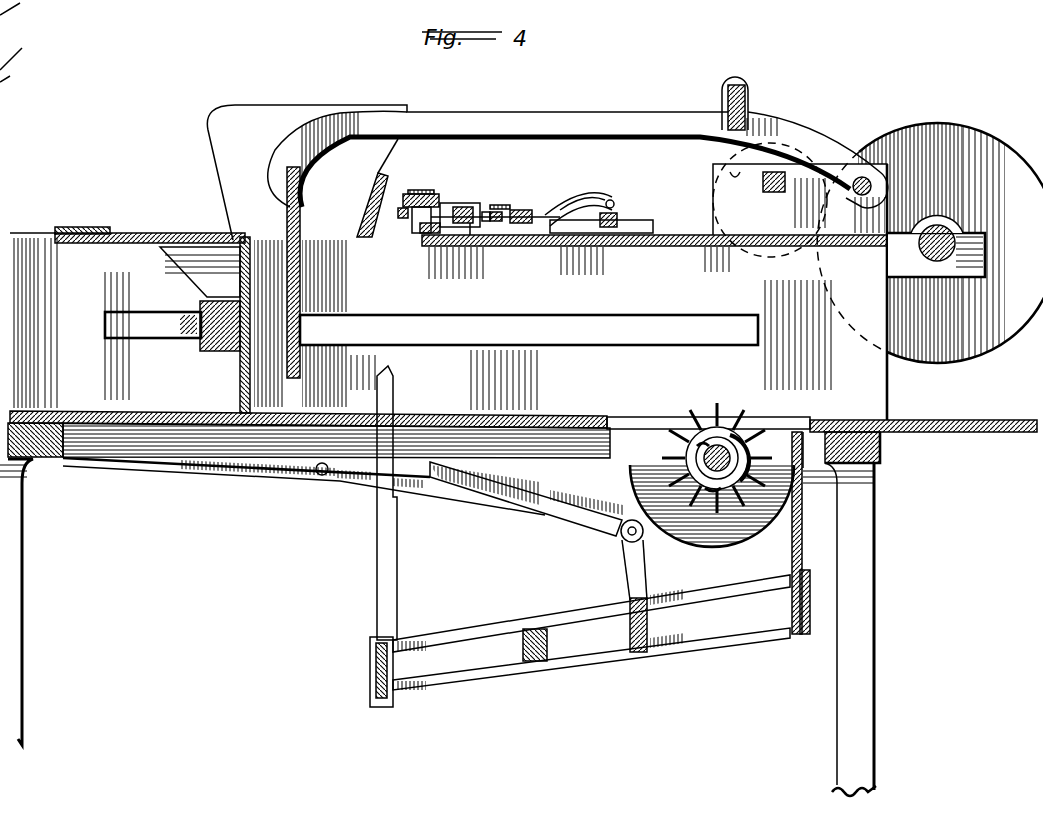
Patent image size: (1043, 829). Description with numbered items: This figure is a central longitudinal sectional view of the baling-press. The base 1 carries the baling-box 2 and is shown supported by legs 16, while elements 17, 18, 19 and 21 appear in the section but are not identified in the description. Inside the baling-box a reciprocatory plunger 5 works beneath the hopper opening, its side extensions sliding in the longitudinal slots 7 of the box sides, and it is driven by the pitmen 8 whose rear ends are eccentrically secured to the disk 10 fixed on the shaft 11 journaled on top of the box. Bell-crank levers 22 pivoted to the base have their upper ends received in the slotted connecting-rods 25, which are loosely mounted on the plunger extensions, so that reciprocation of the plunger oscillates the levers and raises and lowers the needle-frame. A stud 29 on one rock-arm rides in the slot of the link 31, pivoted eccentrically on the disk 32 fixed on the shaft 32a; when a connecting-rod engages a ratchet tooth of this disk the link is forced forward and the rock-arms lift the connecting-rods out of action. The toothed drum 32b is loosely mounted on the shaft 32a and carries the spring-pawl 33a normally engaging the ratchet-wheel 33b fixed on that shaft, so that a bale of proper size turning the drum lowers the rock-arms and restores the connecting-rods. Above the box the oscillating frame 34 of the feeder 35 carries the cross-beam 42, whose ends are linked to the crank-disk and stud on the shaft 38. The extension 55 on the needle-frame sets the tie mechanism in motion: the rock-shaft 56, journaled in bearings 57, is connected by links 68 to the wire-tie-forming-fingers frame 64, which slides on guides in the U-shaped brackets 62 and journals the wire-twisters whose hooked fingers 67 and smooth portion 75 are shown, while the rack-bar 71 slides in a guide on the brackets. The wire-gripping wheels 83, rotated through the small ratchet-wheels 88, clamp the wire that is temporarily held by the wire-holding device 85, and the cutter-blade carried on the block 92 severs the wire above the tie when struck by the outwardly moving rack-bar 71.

The base 1 is at (282, 96).
The baling-box 2 is at (422, 323).
The reciprocatory plunger 5 is at (192, 233).
The longitudinal slots 7 is at (431, 329).
The pitmen 8 is at (182, 330).
The disk 10 is at (930, 245).
The shaft 11 is at (927, 247).
The legs 16 is at (25, 547).
The bracket 17 is at (802, 527).
The lower rail 18 is at (720, 610).
The upper rail 19 is at (455, 628).
The vertical bar 21 is at (392, 539).
The bell-crank levers 22 is at (565, 502).
The connecting-rods 25 is at (628, 552).
The stud 29 is at (325, 483).
The link 31 is at (298, 466).
The disk 32 is at (715, 533).
The shaft 32a is at (713, 452).
The toothed drum 32b is at (705, 512).
The spring-pawl 33a is at (755, 436).
The ratchet-wheel 33b is at (696, 446).
The oscillating frame 34 is at (457, 123).
The feeder 35 is at (302, 271).
The shaft 38 is at (782, 172).
The cross-beam 42 is at (748, 96).
The extension 55 is at (528, 662).
The rock-shaft 56 is at (618, 220).
The bearings 57 is at (610, 262).
The U-shaped brackets 62 is at (551, 213).
The wire-tie-forming-fingers frame 64 is at (534, 175).
The hooked fingers 67 is at (444, 250).
The links 68 is at (581, 197).
The rack-bar 71 is at (495, 222).
The smooth portion 75 is at (472, 262).
The wire-gripping wheels 83 is at (477, 197).
The wire-holding device 85 is at (408, 192).
The small ratchet-wheels 88 is at (427, 200).
The block 92 is at (402, 228).